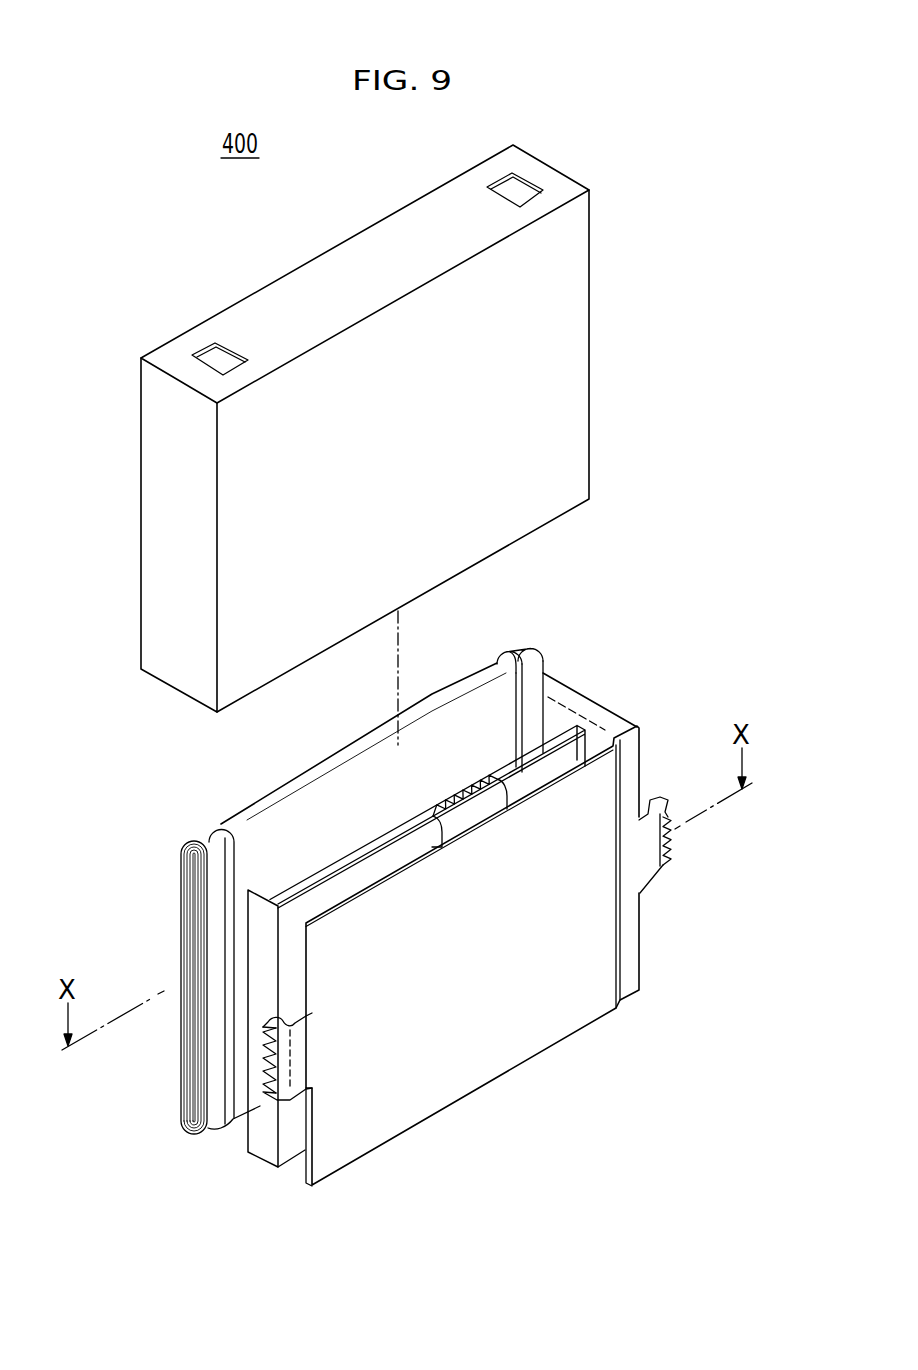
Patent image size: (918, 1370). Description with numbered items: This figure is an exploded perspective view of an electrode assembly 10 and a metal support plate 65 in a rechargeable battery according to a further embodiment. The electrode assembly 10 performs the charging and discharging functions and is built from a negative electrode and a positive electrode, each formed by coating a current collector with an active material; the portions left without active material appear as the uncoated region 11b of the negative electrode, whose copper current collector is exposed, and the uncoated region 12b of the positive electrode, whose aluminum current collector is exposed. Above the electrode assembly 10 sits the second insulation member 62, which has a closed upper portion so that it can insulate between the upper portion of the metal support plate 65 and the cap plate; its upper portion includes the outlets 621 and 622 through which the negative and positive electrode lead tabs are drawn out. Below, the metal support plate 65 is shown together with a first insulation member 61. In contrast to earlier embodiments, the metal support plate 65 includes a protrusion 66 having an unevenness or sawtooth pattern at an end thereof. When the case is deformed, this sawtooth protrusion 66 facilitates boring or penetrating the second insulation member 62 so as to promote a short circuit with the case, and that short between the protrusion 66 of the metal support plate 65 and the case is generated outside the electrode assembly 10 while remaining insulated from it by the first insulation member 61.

The second insulation member 62 is at (547, 375).
The outlet 621 is at (518, 190).
The outlet 622 is at (210, 358).
The electrode assembly 10 is at (313, 758).
The uncoated region of the negative electrode 11b is at (525, 650).
The uncoated region of the positive electrode 12b is at (197, 838).
The first insulation member 61 is at (290, 1140).
The metal support plate 65 is at (512, 1070).
The protrusion 66 is at (470, 779).